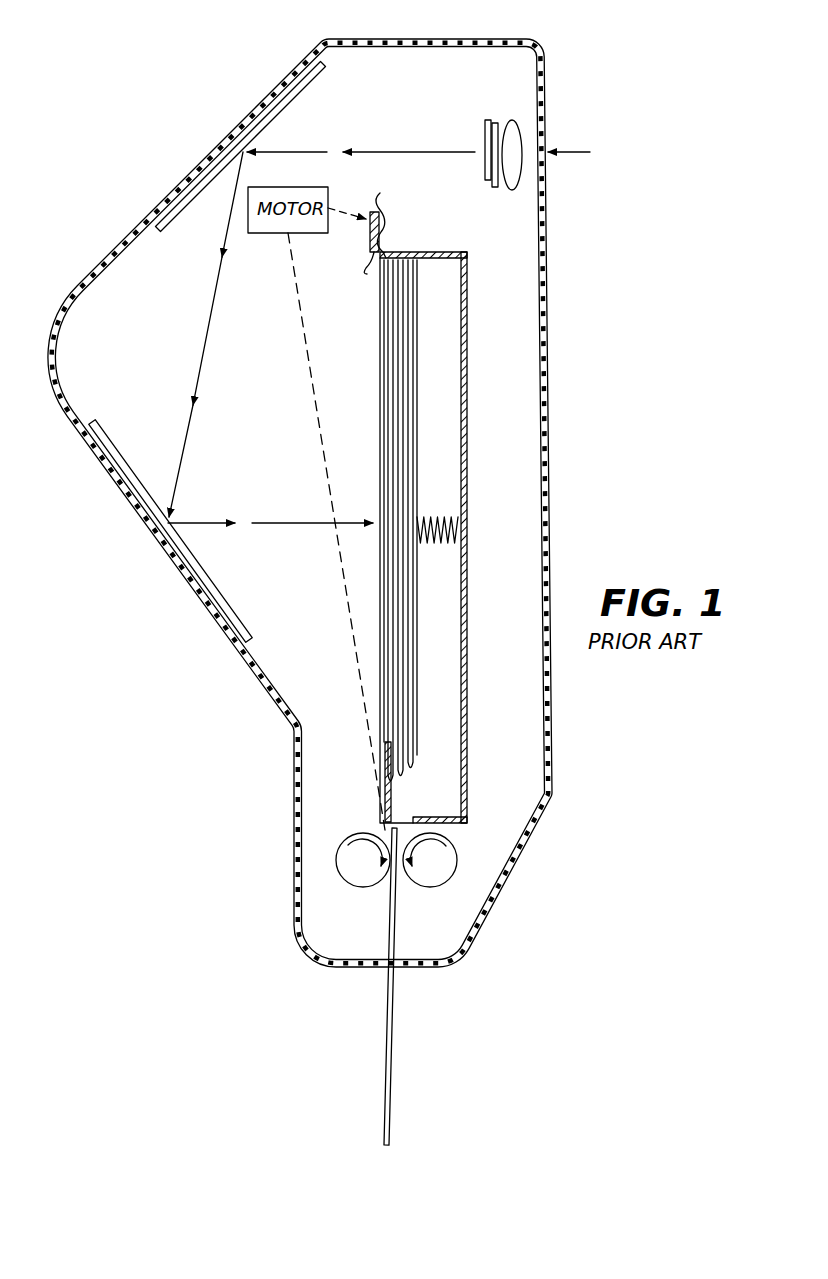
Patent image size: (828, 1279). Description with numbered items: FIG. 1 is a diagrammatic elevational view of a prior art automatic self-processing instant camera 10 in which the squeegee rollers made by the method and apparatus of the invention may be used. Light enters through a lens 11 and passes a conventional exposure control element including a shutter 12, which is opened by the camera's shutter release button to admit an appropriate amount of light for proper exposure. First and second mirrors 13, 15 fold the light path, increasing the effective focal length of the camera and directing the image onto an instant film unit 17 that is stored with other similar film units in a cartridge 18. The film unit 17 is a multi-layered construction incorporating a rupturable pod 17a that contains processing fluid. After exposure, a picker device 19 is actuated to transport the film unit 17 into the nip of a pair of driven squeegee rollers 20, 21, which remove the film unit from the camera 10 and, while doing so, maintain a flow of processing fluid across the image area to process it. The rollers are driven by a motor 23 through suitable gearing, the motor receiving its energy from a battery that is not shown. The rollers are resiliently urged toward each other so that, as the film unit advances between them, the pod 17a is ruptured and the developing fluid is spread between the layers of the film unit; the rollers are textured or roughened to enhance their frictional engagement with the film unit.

The instant camera 10 is at (614, 22).
The lens 11 is at (513, 140).
The shutter 12 is at (496, 120).
The first mirror 13 is at (292, 94).
The second mirror 15 is at (216, 588).
The instant film unit 17 is at (392, 613).
The rupturable pod 17a is at (386, 797).
The cartridge 18 is at (440, 252).
The picker device 19 is at (380, 193).
The squeegee roller 20 is at (364, 878).
The squeegee roller 21 is at (430, 878).
The motor 23 is at (268, 235).